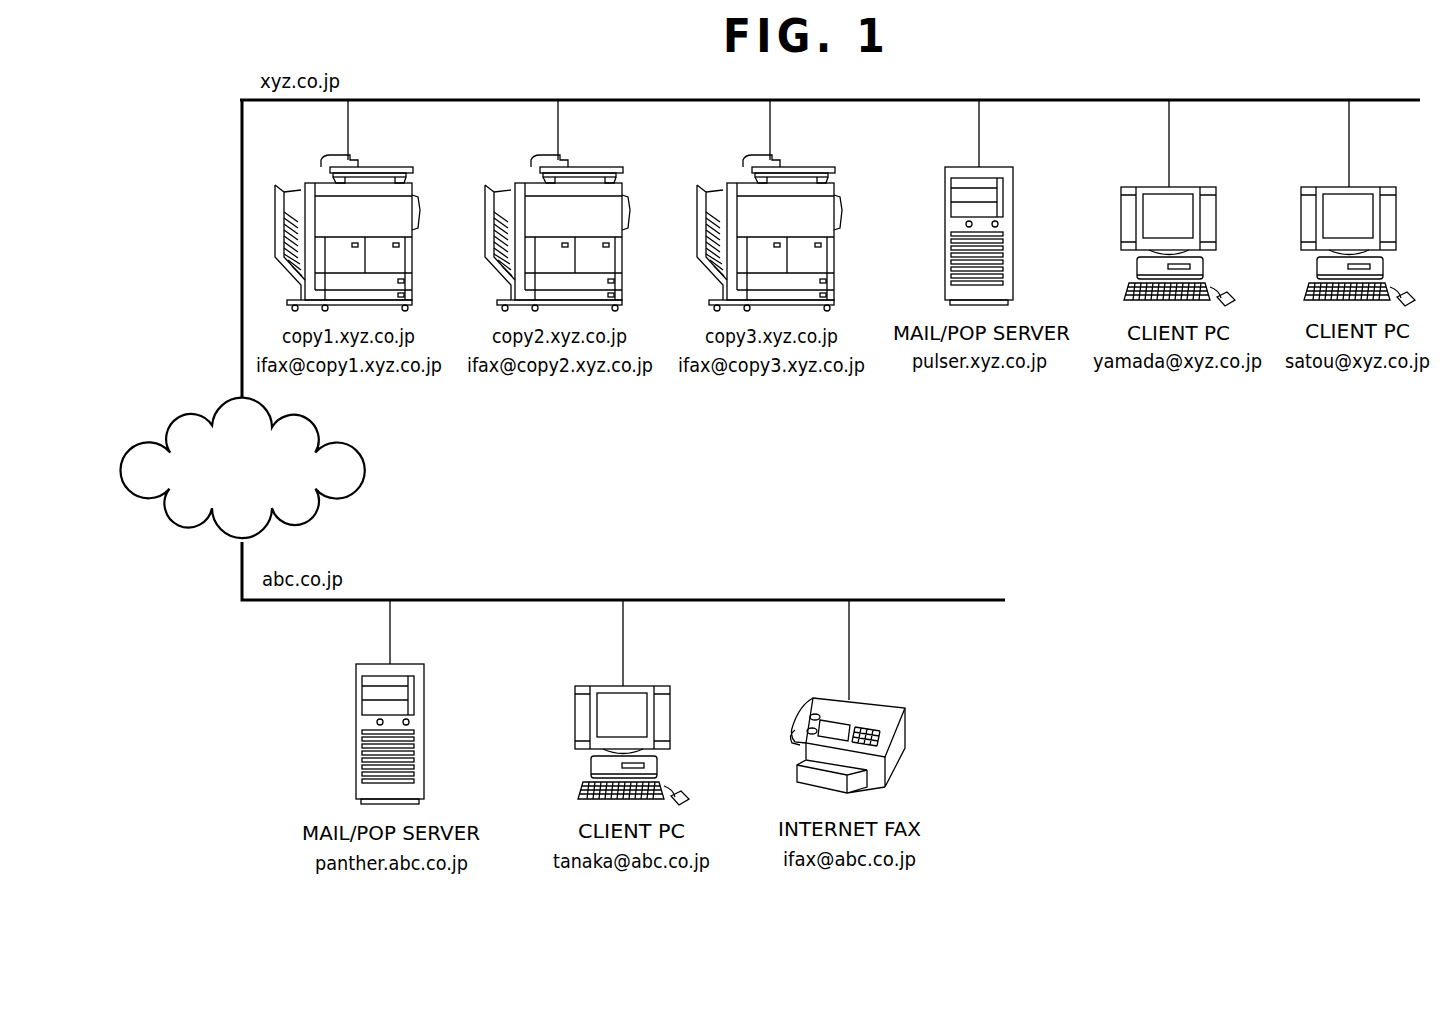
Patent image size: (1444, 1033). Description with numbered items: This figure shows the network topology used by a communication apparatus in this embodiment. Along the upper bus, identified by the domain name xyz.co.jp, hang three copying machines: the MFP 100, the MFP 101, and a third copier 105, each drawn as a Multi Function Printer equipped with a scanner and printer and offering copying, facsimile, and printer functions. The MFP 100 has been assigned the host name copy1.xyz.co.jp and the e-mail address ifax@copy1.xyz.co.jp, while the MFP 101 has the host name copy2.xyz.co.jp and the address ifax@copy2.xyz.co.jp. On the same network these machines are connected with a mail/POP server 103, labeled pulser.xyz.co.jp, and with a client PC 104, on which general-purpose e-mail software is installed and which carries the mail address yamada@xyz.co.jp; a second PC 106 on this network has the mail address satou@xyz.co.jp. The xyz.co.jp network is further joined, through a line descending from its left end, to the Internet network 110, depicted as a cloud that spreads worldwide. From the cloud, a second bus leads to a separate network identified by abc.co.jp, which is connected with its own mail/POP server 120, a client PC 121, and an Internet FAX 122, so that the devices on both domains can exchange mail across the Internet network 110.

The MFP 100 is at (392, 162).
The MFP 101 is at (602, 162).
The copying machine (copy3.xyz.co.jp) 105 is at (814, 162).
The mail/POP server 103 is at (1001, 165).
The client PC 104 is at (1195, 186).
The PC 106 is at (1375, 186).
The Internet network 110 is at (368, 468).
The mail/POP server 120 is at (413, 662).
The client PC 121 is at (648, 685).
The Internet FAX 122 is at (886, 704).